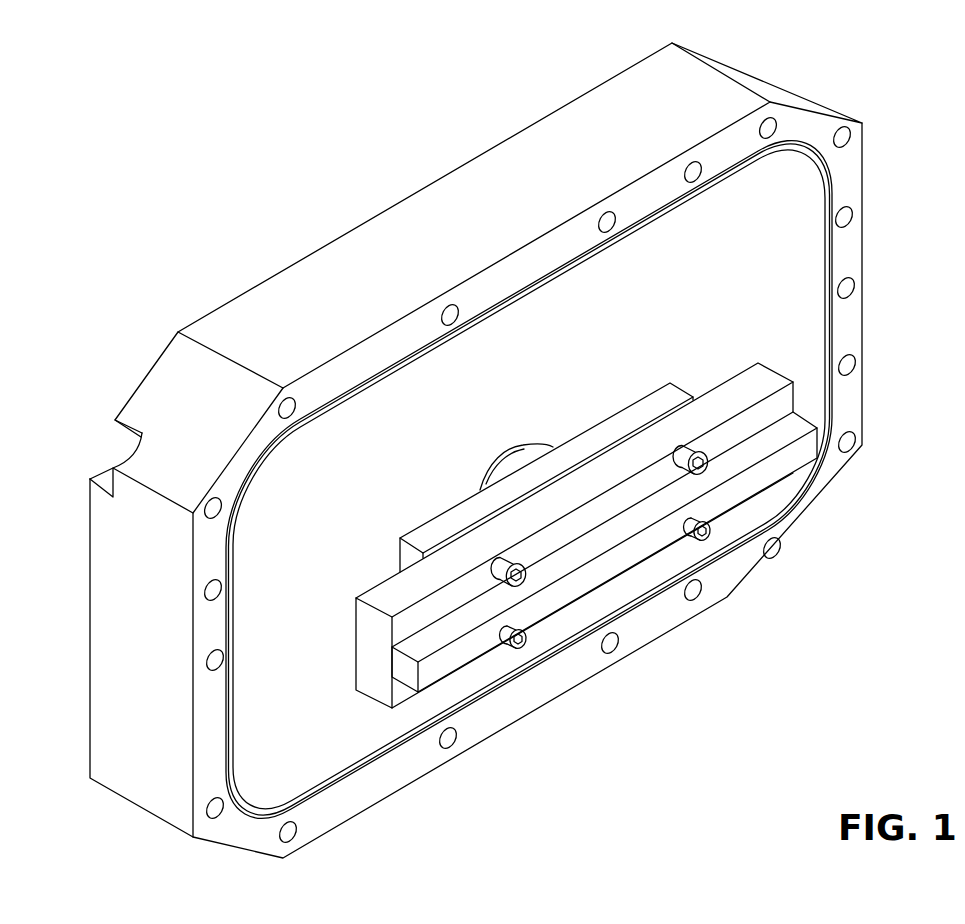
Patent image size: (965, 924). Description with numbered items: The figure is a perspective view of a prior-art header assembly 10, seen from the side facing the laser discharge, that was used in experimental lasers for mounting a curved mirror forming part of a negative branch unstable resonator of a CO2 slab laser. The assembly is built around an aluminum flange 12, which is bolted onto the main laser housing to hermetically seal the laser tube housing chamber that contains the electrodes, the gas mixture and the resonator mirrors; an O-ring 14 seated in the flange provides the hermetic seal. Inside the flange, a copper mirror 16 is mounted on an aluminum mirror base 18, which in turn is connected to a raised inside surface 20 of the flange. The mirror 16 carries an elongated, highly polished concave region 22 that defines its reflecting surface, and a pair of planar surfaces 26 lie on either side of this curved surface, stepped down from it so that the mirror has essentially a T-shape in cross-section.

The header assembly 10 is at (854, 82).
The aluminum flange 12 is at (437, 197).
The O-ring 14 is at (838, 201).
The copper mirror 16 is at (376, 655).
The aluminum mirror base 18 is at (647, 412).
The raised inside surface 20 is at (520, 443).
The concave region 22 is at (790, 460).
The planar surfaces 26 is at (783, 402).